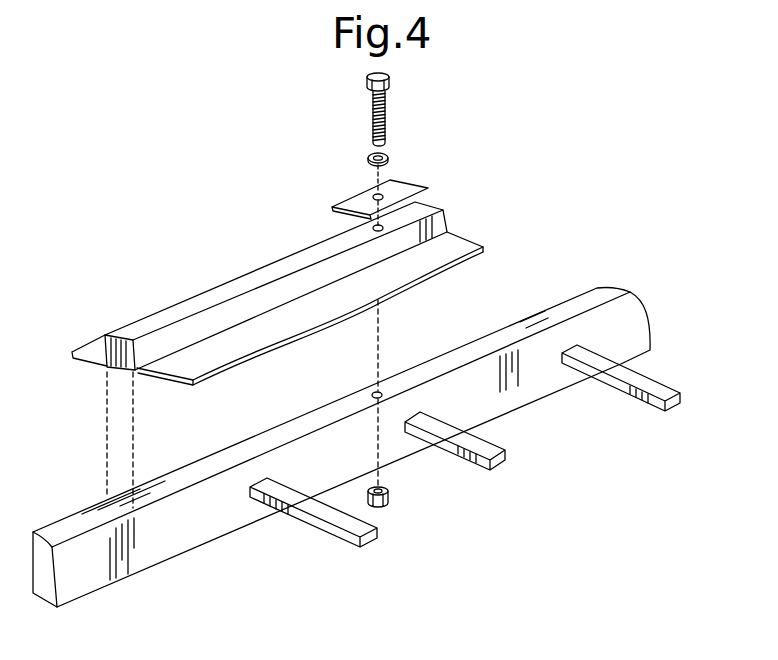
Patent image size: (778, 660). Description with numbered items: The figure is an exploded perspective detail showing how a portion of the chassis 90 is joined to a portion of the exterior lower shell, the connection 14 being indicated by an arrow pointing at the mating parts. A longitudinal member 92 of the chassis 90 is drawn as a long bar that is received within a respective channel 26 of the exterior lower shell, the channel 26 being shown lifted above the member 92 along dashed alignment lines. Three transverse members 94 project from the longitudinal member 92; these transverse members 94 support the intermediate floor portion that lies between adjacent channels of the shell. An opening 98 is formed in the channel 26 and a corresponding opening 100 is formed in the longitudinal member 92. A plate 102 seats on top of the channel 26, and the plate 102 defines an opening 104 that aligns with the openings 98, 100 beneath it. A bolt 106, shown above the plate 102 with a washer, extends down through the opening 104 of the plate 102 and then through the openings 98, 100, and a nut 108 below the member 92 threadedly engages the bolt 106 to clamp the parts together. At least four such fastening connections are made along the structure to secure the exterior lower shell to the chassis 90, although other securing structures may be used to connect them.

The mounting assembly 14 is at (381, 340).
The channel 26 is at (300, 343).
The chassis 90 is at (354, 419).
The longitudinal member 92 is at (576, 298).
The transverse members 94 is at (645, 384).
The opening 98 is at (372, 223).
The opening 100 is at (381, 388).
The plate 102 is at (400, 193).
The opening 104 is at (377, 192).
The bolt 106 is at (386, 120).
The nut 108 is at (391, 496).